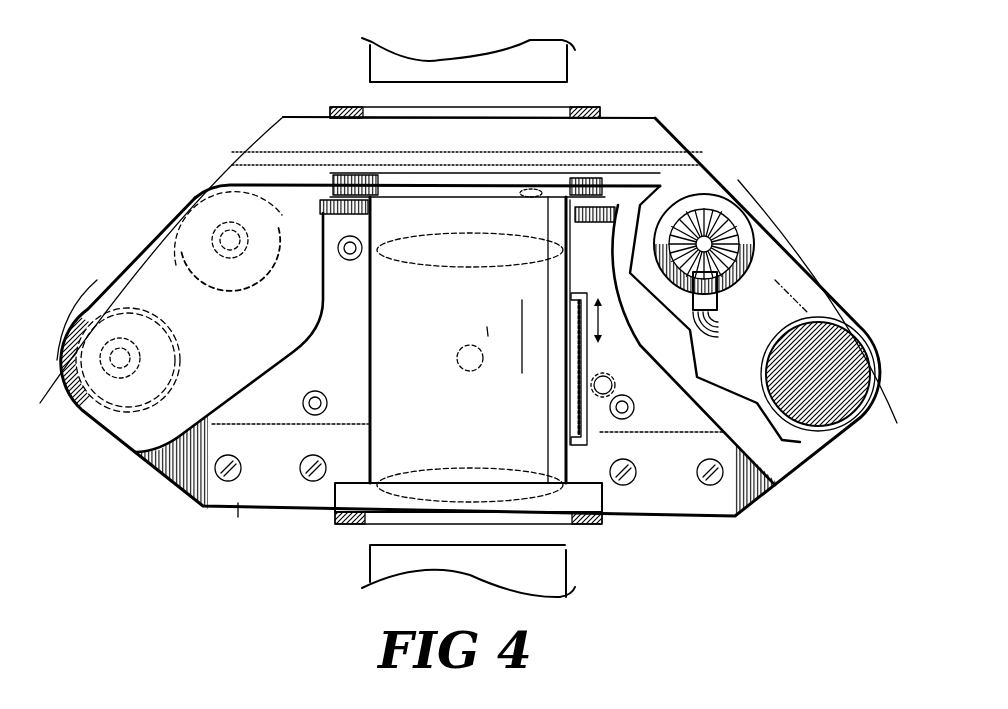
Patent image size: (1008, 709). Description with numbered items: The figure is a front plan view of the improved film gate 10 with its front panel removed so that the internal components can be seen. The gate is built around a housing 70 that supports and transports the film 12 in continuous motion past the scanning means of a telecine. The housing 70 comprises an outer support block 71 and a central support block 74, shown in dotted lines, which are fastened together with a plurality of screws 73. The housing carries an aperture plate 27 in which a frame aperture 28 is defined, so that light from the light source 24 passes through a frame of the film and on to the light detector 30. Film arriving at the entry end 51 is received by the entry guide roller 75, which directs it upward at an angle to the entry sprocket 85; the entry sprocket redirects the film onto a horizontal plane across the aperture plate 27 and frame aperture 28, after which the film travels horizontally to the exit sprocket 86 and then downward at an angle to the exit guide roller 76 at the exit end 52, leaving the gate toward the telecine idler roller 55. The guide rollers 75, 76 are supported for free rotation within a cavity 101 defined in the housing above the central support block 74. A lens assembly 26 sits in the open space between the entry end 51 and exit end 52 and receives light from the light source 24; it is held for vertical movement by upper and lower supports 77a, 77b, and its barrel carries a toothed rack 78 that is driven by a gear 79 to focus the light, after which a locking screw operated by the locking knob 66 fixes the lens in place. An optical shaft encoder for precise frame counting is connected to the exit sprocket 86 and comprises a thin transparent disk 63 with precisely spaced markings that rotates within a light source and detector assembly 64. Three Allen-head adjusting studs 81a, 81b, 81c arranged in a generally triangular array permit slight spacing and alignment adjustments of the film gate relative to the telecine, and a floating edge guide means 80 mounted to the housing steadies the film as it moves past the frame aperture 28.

The film gate 10 is at (155, 96).
The film 12 is at (97, 278).
The light source 24 is at (565, 560).
The lens assembly 26 is at (390, 431).
The aperture plate 27 is at (372, 176).
The frame aperture 28 is at (523, 190).
The light detector 30 is at (570, 67).
The entry end 51 is at (105, 242).
The exit end 52 is at (864, 266).
The telecine idler roller 55 is at (285, 150).
The transparent disk 63 is at (718, 200).
The light source and detector assembly 64 is at (717, 300).
The locking knob 66 is at (457, 362).
The housing 70 is at (200, 498).
The outer support block 71 is at (230, 398).
The screws 73 is at (293, 475).
The central support block 74 is at (238, 500).
The entry guide roller 75 is at (62, 372).
The exit guide roller 76 is at (863, 415).
The upper support 77a is at (317, 204).
The lower support 77b is at (345, 525).
The toothed rack 78 is at (605, 437).
The gear 79 is at (615, 383).
The floating edge guide means 80 is at (578, 178).
The Allen-head adjusting stud 81a is at (312, 390).
The Allen-head adjusting stud 81b is at (635, 407).
The Allen-head adjusting stud 81c is at (350, 262).
The entry sprocket 85 is at (203, 197).
The exit sprocket 86 is at (742, 200).
The cavity 101 is at (814, 313).